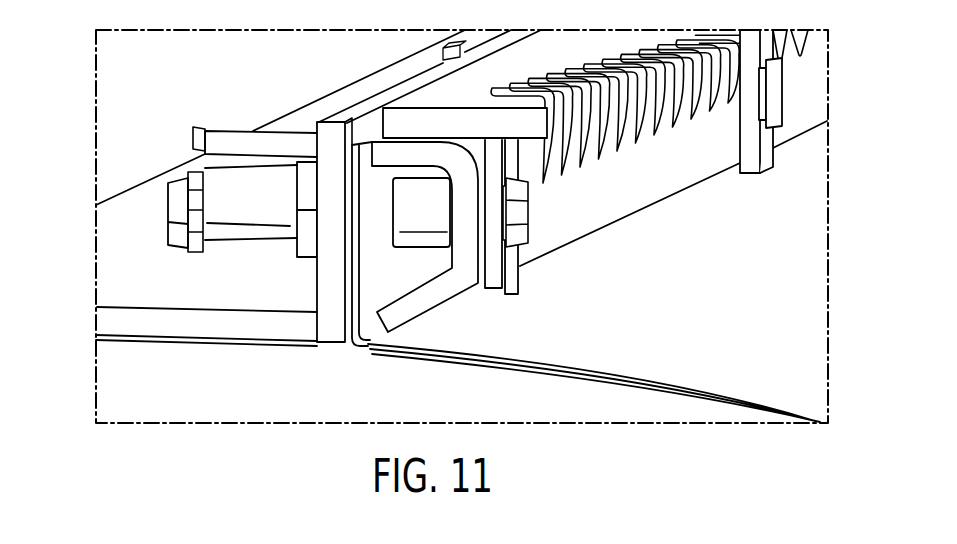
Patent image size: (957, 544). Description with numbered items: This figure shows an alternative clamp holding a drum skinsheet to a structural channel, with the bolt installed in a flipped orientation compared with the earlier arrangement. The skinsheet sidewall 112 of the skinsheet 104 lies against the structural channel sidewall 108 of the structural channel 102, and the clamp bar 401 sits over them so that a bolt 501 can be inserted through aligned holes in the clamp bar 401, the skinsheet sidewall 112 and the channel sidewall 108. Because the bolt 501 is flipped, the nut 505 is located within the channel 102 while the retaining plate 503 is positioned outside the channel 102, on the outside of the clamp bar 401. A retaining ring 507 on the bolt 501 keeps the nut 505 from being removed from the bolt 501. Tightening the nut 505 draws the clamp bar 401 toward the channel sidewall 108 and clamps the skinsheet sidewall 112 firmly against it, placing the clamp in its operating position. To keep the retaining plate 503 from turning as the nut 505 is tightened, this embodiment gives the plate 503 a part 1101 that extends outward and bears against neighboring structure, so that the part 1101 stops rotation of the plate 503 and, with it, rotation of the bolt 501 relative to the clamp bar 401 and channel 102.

The structural channel 102 is at (163, 158).
The skinsheet 104 is at (728, 310).
The structural channel sidewall 108 is at (330, 323).
The skinsheet sidewall 112 is at (367, 313).
The clamp bar 401 is at (415, 307).
The bolt 501 is at (240, 187).
The retaining plate 503 is at (493, 288).
The nut 505 is at (308, 252).
The retaining ring 507 is at (197, 238).
The part of plate 1101 is at (400, 122).